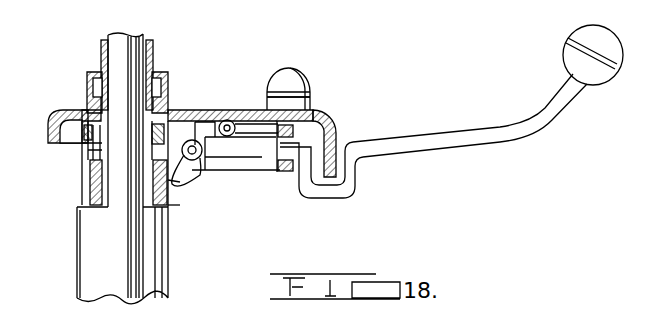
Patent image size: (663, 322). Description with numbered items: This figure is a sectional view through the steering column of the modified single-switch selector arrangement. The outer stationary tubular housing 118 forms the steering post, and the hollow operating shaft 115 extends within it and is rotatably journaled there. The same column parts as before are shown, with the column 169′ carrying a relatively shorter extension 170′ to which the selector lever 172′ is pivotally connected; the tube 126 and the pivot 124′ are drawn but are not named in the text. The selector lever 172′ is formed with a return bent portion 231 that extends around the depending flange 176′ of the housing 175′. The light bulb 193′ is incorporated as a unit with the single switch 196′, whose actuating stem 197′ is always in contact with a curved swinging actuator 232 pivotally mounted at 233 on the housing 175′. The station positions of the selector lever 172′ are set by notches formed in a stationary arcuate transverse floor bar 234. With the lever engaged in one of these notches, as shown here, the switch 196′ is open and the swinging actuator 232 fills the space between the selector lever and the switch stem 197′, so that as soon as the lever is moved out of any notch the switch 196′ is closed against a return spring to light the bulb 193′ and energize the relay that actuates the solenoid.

The tubular column 126 is at (136, 45).
The outer stationary tubular housing 118 is at (90, 270).
The hollow operating shaft 115 is at (172, 213).
The column 169′ is at (170, 188).
The extension 170′ is at (173, 183).
The pivot pin 124′ is at (192, 139).
The housing 175′ is at (218, 111).
The pivot 233 is at (228, 119).
The actuating stem 197′ is at (274, 142).
The light bulb 193′ is at (293, 69).
The single switch 196′ is at (311, 106).
The curved swinging actuator 232 is at (309, 118).
The depending flange 176′ is at (331, 146).
The stationary arcuate transverse floor bar 234 is at (283, 174).
The return bent portion 231 is at (326, 199).
The selector lever 172′ is at (424, 140).